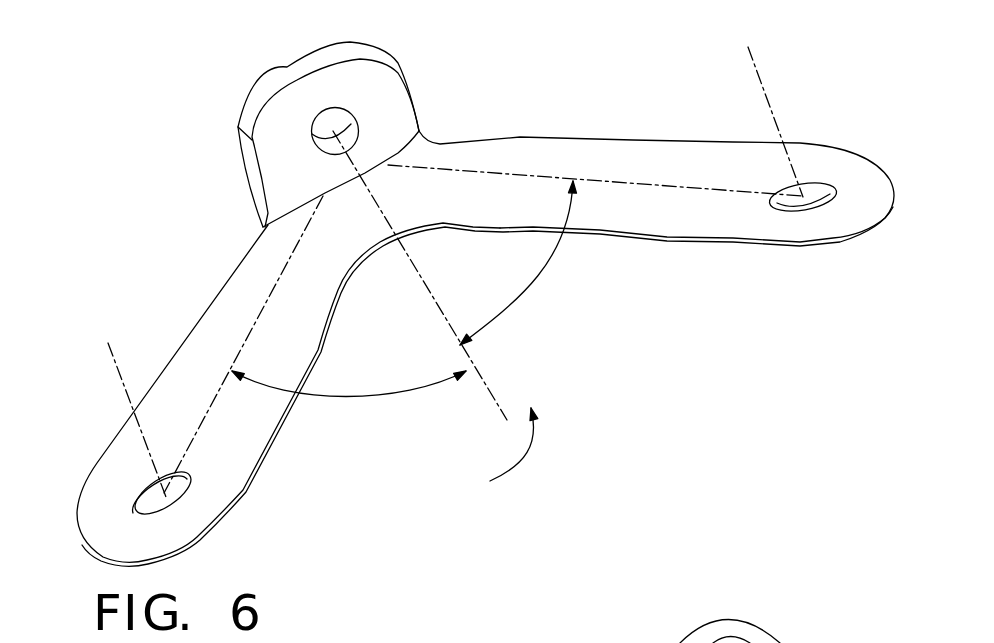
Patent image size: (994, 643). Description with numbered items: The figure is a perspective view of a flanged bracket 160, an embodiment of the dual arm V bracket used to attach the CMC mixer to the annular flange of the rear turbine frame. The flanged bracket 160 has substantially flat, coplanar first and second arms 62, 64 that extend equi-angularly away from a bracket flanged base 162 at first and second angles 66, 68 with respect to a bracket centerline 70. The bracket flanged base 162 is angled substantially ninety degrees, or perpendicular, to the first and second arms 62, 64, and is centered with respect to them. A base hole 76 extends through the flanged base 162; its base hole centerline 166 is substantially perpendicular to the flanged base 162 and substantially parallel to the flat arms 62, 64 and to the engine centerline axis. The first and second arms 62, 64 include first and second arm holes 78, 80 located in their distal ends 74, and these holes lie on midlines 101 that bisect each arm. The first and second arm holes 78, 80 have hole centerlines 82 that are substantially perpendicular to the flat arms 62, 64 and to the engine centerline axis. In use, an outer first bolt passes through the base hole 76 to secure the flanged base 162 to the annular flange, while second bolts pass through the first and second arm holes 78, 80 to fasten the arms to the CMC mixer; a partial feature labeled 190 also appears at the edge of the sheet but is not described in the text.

The first arm 62 is at (259, 460).
The second arm 64 is at (800, 143).
The first angle 66 is at (363, 400).
The second angle 68 is at (540, 280).
The bracket centerline 70 is at (491, 398).
The distal ends 74 is at (783, 247).
The base hole 76 is at (335, 108).
The first arm hole 78 is at (188, 488).
The second arm hole 80 is at (827, 187).
The hole centerlines 82 is at (751, 52).
The midlines 101 is at (552, 177).
The flanged bracket 160 is at (487, 451).
The bracket flanged base 162 is at (410, 103).
The base hole centerline 166 is at (421, 132).
The fastener 190 is at (770, 625).